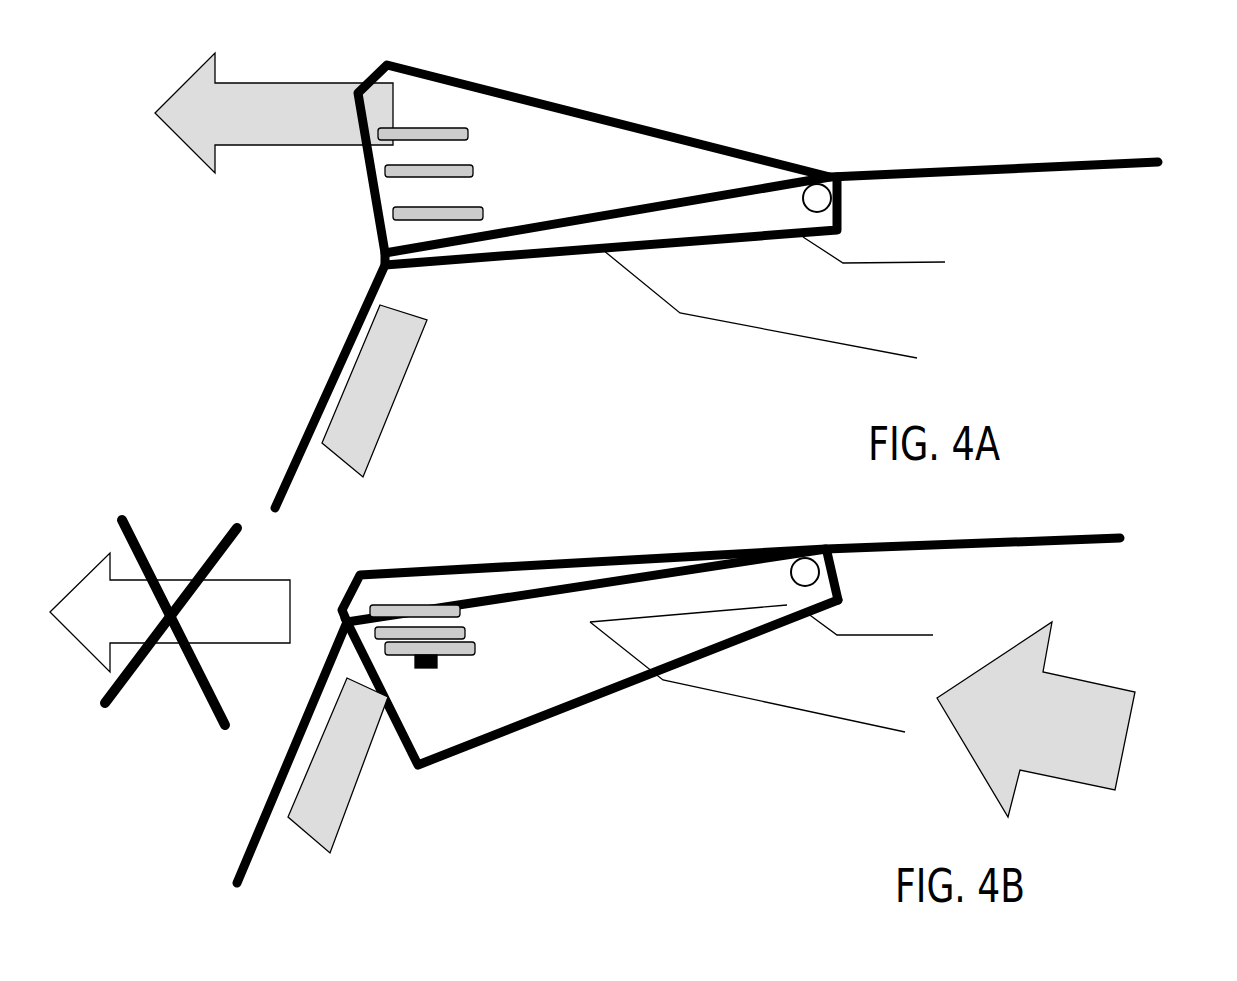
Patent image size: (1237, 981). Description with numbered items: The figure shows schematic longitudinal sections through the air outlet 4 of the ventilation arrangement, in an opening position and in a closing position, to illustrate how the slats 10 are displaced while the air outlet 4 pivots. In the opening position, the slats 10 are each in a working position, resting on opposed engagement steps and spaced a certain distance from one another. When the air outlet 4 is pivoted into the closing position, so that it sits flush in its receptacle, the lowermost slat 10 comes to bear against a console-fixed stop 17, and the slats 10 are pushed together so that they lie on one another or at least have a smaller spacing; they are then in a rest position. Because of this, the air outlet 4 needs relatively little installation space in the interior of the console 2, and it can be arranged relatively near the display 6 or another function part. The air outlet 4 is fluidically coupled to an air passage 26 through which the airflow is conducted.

In FIG. 4A, the support beam 2 is at (997, 193).
In FIG. 4B, the support beam 2 is at (872, 572).
In FIG. 4A, the pivoting arm 4 is at (567, 130).
In FIG. 4B, the pivoting arm 4 is at (515, 698).
In FIG. 4A, the panel 6 is at (373, 385).
In FIG. 4B, the panel 6 is at (310, 797).
In FIG. 4A, the slots 10 is at (373, 143).
In FIG. 4B, the slots 10 is at (450, 643).
In FIG. 4B, the stop block 17 is at (427, 663).
In FIG. 4A, the link member 26 is at (782, 315).
In FIG. 4B, the link member 26 is at (785, 688).